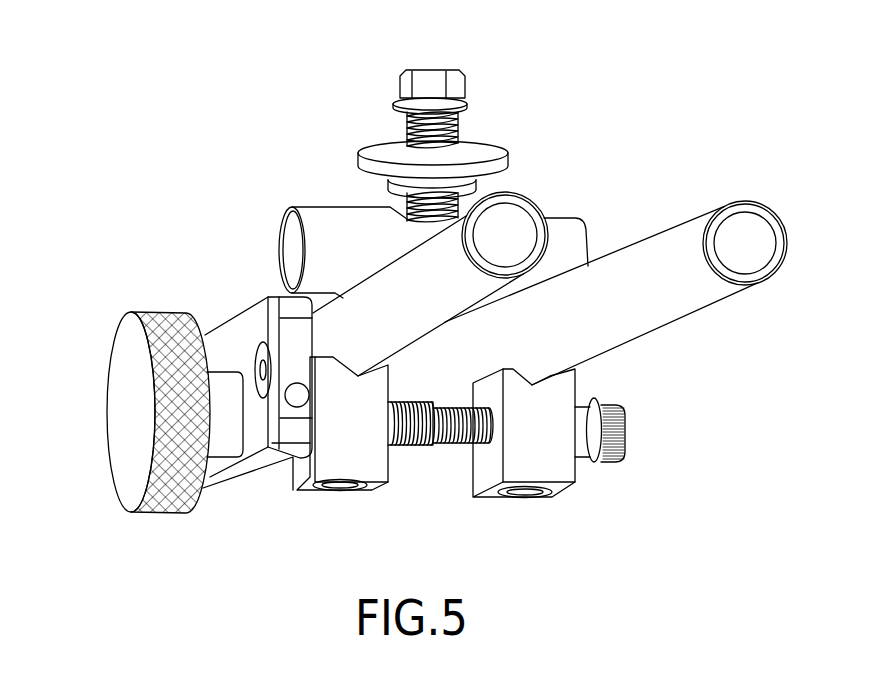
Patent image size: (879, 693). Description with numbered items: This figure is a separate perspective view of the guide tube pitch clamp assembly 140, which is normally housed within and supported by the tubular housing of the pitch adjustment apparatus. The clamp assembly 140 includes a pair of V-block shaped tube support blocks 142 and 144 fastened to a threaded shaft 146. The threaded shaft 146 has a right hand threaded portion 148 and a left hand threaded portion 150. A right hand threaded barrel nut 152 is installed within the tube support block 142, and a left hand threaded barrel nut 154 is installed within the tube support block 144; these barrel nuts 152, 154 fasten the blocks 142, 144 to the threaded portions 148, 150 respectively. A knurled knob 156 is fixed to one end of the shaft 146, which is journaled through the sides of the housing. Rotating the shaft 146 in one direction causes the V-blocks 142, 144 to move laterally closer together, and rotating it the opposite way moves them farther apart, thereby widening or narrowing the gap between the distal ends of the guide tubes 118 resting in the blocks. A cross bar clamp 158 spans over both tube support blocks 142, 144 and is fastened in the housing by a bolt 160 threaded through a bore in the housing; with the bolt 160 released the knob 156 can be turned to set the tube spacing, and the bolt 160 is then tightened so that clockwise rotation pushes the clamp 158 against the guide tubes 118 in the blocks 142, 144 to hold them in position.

The guide tube pitch clamp assembly 140 is at (414, 298).
The bolt 160 is at (467, 90).
The cross bar clamp 158 is at (584, 240).
The guide tubes 118 is at (527, 194).
The knurled knob 156 is at (118, 472).
The tube support block 142 is at (370, 472).
The right hand threaded barrel nut 152 is at (342, 489).
The right hand threaded portion 148 is at (410, 447).
The left hand threaded portion 150 is at (450, 447).
The tube support block 144 is at (568, 478).
The left hand threaded barrel nut 154 is at (526, 494).
The threaded shaft 146 is at (625, 418).